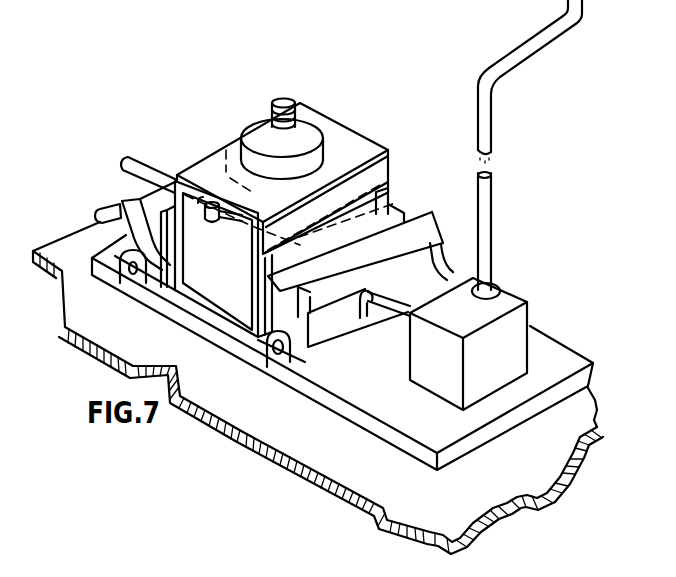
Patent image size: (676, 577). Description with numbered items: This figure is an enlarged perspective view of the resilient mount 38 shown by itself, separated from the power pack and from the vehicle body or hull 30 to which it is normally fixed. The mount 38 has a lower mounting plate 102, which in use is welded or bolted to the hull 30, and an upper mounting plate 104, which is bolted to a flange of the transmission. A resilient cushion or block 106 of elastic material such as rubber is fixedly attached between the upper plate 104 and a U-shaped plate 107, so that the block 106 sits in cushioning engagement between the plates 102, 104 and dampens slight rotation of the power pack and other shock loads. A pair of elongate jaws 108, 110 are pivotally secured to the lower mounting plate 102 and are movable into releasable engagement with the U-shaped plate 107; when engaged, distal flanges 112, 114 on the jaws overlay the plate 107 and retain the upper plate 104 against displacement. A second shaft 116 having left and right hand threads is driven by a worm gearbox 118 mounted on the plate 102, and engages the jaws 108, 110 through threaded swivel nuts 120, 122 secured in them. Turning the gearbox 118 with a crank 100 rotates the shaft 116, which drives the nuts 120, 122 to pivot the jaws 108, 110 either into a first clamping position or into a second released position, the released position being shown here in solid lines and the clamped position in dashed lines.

The body or hull 30 is at (310, 488).
The resilient mount 38 is at (404, 134).
The crank 100 is at (515, 65).
The lower mounting plate 102 is at (537, 403).
The upper mounting plate 104 is at (345, 140).
The resilient cushion or block 106 is at (220, 290).
The U-shaped plate 107 is at (175, 305).
The jaw 108 is at (100, 219).
The jaw 110 is at (330, 327).
The distal flange 112 is at (230, 146).
The distal flange 114 is at (428, 228).
The second shaft 116 is at (153, 176).
The worm gearbox 118 is at (527, 338).
The threaded swivel nut 120 is at (232, 145).
The threaded swivel nut 122 is at (363, 308).